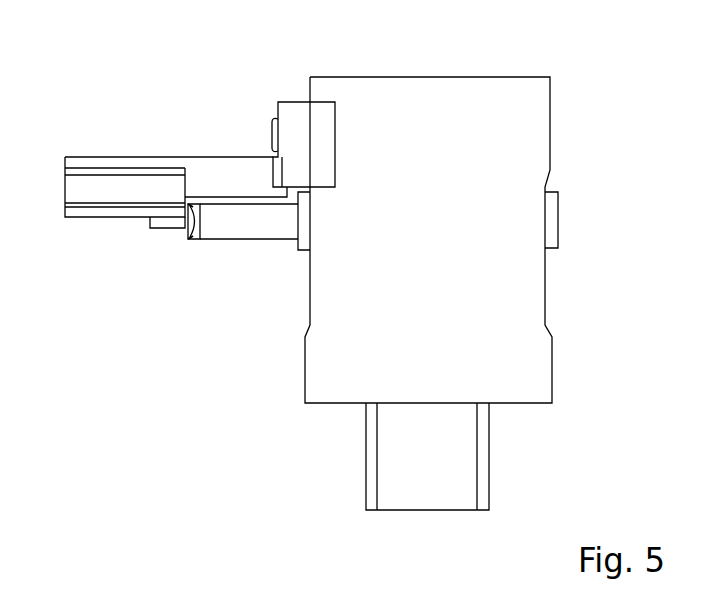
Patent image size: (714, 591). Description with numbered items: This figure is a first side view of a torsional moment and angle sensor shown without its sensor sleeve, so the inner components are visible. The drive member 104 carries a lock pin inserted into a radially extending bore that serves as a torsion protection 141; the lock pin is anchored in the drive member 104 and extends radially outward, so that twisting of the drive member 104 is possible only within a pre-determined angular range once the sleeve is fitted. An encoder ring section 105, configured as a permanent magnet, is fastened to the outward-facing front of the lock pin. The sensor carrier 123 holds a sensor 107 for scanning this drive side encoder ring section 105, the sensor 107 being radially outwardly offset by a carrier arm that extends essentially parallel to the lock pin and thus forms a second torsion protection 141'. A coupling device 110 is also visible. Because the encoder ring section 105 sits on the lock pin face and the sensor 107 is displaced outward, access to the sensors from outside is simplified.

The coupling device 110 is at (309, 76).
The sensor carrier 123 is at (500, 340).
The drive member 104 is at (485, 432).
The torsion protection 141' is at (176, 144).
The sensor 107 is at (162, 218).
The encoder ring section 105 is at (190, 233).
The torsion protection 141 is at (243, 269).